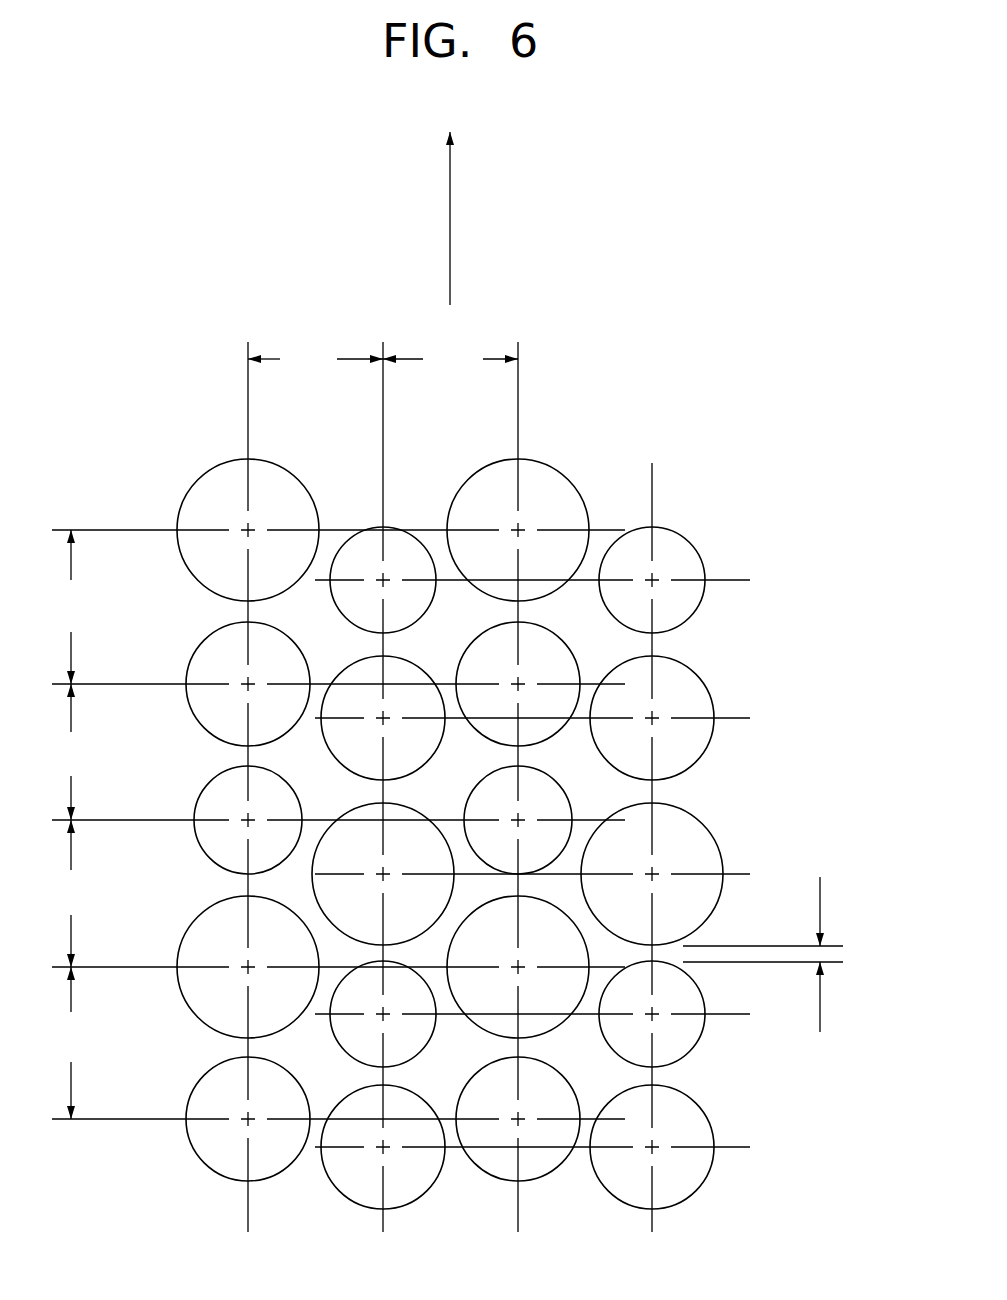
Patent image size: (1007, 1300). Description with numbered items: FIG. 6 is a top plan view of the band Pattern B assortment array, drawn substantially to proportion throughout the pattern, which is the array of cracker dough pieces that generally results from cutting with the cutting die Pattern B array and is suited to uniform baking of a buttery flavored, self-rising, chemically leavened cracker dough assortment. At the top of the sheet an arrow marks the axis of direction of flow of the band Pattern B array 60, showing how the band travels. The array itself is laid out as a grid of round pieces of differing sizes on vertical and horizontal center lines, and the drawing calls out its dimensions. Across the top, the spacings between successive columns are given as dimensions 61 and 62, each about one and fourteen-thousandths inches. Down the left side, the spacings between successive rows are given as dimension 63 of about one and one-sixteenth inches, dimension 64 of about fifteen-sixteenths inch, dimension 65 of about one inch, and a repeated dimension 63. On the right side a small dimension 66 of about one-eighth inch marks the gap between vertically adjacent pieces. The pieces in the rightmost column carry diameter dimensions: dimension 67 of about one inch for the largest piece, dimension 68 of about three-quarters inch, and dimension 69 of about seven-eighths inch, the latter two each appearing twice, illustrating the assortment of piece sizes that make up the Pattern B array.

The axis of direction of flow of the band Pattern B array 60 is at (452, 236).
The array dimension 61 is at (315, 359).
The array dimension 62 is at (450, 359).
The array dimension 63 is at (72, 824).
The array dimension 64 is at (72, 752).
The array dimension 65 is at (73, 893).
The array dimension 66 is at (820, 1032).
The array dimension 67 is at (652, 874).
The array dimension 68 is at (652, 861).
The array dimension 69 is at (652, 868).